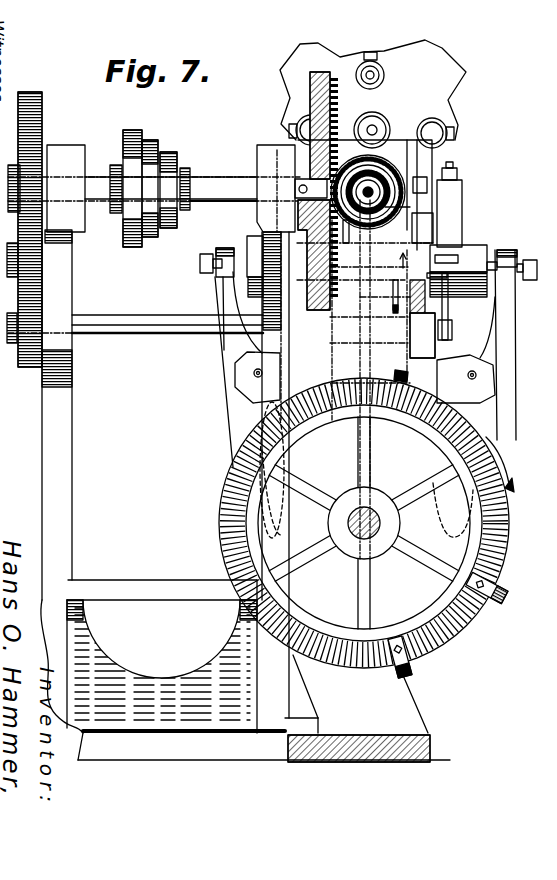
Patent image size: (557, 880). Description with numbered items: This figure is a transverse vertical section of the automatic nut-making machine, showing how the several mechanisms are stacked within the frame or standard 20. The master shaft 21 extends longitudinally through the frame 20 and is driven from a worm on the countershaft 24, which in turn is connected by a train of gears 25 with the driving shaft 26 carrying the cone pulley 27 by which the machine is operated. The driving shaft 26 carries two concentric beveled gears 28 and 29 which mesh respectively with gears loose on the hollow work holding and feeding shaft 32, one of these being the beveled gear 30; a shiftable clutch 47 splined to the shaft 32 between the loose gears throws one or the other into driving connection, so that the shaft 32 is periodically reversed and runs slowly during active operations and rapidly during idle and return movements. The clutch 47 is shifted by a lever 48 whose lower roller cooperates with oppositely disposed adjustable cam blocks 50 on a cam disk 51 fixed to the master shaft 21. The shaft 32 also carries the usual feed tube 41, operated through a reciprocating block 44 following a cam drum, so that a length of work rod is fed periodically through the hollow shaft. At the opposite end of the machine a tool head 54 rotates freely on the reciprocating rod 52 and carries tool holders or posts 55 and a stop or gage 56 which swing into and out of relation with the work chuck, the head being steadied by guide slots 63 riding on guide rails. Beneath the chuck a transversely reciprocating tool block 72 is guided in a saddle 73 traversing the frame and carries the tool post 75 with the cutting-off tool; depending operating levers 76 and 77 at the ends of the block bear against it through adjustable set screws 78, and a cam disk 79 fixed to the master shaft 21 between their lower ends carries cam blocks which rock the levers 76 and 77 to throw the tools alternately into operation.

The frame or standard 20 is at (57, 415).
The master shaft 21 is at (368, 535).
The countershaft 24 is at (133, 325).
The train of gears 25 is at (555, 262).
The driving shaft 26 is at (220, 183).
The cone pulley 27 is at (185, 167).
The beveled gear 28 is at (297, 112).
The beveled gear 29 is at (337, 245).
The beveled gear 30 is at (357, 123).
The hollow work holding and feeding shaft 32 is at (392, 208).
The feed tube 41 is at (400, 180).
The reciprocating block 44 is at (405, 377).
The shiftable clutch 47 is at (348, 222).
The lever 48 is at (400, 262).
The adjustable cam blocks 50 is at (504, 593).
The cam disk 51 is at (502, 532).
The reciprocating rod 52 is at (379, 130).
The tool head 54 is at (423, 108).
The tool holders or posts 55 is at (384, 82).
The stop or gage 56 is at (448, 137).
The guide slots 63 is at (297, 63).
The transversely reciprocating tool block 72 is at (255, 250).
The saddle 73 is at (450, 305).
The tool post 75 is at (453, 190).
The operating lever 76 is at (220, 362).
The operating lever 77 is at (500, 390).
The adjustable set screws 78 is at (200, 261).
The cam disk 79 is at (467, 542).